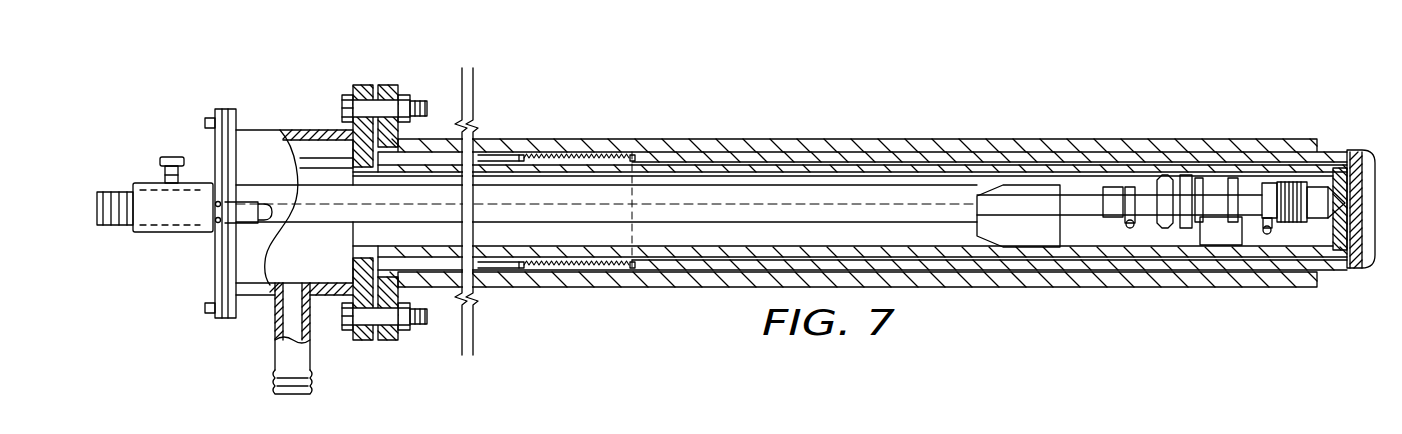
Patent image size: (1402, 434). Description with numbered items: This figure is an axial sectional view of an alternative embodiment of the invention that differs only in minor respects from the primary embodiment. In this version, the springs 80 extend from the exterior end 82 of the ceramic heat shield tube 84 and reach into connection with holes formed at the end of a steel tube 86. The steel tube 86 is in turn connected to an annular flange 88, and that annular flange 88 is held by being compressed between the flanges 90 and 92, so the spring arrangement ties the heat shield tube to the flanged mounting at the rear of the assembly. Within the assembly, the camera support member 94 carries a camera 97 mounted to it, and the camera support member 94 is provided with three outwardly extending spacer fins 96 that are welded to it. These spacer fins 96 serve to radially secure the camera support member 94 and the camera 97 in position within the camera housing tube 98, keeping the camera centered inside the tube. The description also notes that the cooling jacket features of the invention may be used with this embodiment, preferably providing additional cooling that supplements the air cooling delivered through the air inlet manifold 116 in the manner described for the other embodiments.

The springs 80 is at (598, 152).
The exterior end 82 is at (684, 276).
The ceramic heat shield tube 84 is at (1346, 270).
The steel tube 86 is at (496, 275).
The annular flange 88 is at (375, 340).
The flange 90 is at (389, 85).
The flange 92 is at (360, 85).
The camera support member 94 is at (824, 187).
The spacer fins 96 is at (990, 233).
The camera 97 is at (1219, 188).
The camera housing tube 98 is at (920, 168).
The air inlet manifold 116 is at (281, 130).